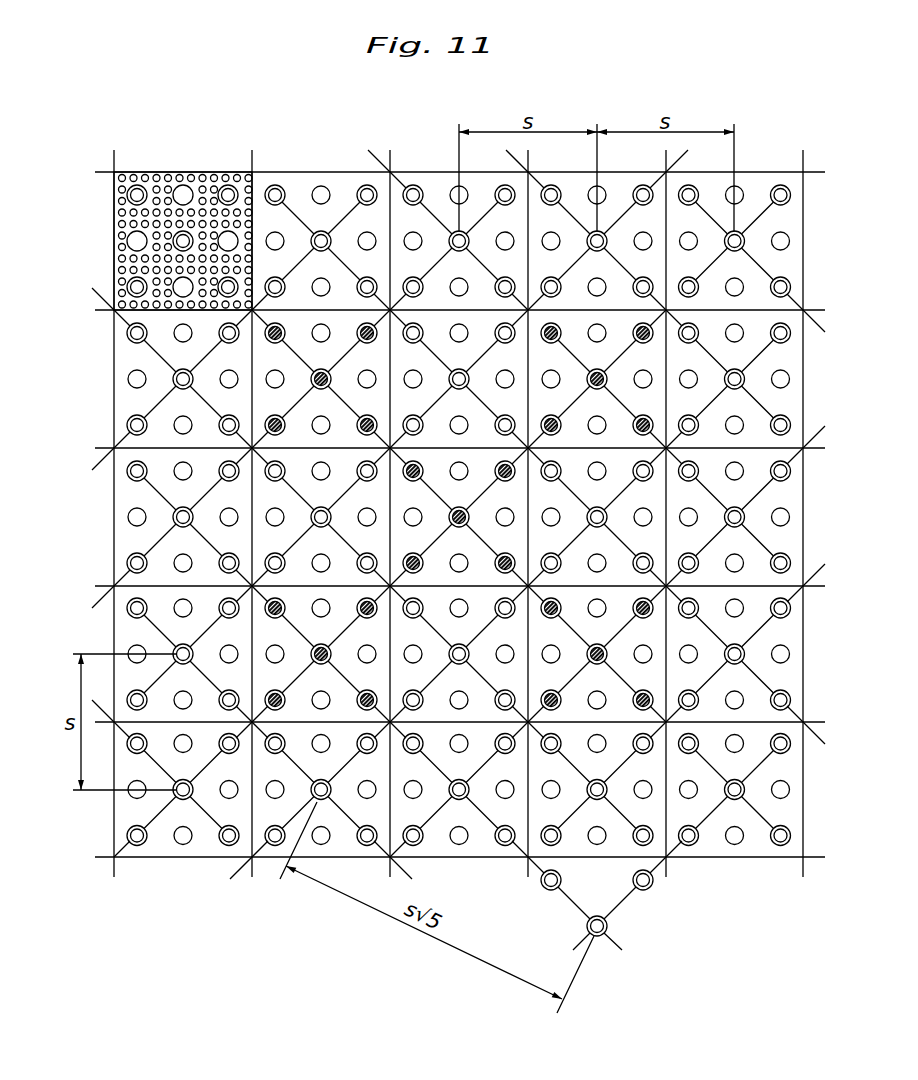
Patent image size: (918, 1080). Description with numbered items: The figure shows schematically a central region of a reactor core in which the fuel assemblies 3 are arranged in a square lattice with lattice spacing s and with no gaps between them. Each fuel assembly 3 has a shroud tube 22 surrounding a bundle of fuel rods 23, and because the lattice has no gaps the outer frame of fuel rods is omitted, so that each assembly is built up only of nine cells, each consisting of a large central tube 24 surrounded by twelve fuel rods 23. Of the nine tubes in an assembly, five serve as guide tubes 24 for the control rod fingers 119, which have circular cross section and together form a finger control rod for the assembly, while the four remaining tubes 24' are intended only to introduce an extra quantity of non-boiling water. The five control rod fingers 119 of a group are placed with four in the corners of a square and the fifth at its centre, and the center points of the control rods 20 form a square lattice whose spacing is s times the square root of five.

The fuel assembly 3 is at (189, 169).
The diagonal strips 20 is at (515, 456).
The shroud tube 22 is at (112, 190).
The fuel rods 23 is at (117, 223).
The tubes 24 is at (429, 482).
The tubes 24' is at (444, 527).
The control rod fingers 119 is at (137, 186).